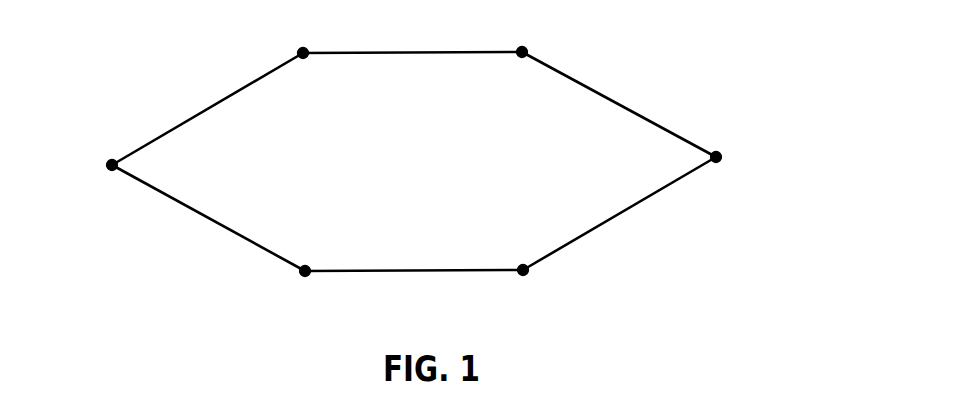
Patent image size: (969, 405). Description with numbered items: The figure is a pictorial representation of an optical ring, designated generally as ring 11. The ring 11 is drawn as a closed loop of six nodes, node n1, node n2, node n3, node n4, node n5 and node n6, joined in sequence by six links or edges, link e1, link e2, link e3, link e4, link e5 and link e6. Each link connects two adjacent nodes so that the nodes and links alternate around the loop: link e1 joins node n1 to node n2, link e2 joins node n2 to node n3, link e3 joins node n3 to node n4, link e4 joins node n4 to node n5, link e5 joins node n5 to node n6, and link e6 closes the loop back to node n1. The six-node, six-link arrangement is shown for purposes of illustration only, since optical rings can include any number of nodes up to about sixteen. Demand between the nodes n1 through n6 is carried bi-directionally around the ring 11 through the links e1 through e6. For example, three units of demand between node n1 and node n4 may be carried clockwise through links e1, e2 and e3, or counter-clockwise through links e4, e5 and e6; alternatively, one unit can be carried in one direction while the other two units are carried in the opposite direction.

The ring 11 is at (434, 163).
The node n1 is at (303, 53).
The node n2 is at (522, 52).
The node n3 is at (716, 157).
The node n4 is at (523, 270).
The node n5 is at (305, 271).
The node n6 is at (112, 165).
The link e1 is at (400, 53).
The link e2 is at (593, 90).
The link e3 is at (595, 227).
The link e4 is at (415, 273).
The link e5 is at (188, 208).
The link e6 is at (225, 95).